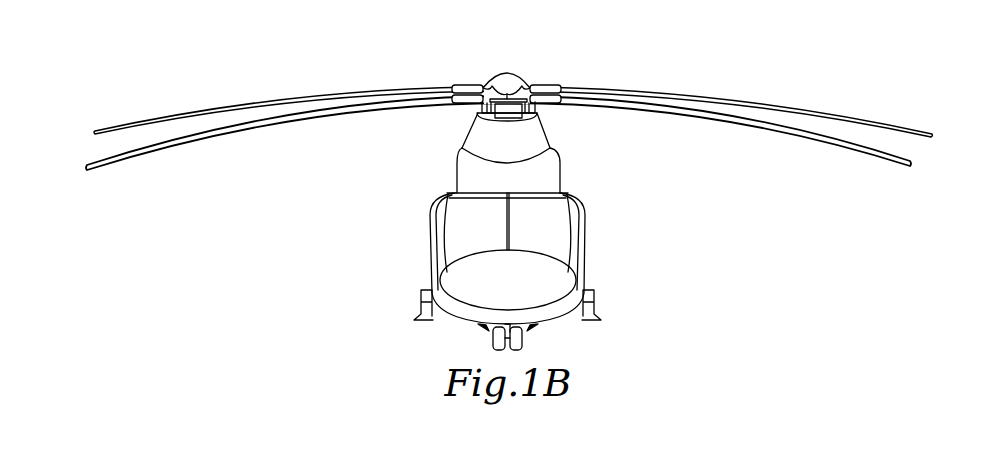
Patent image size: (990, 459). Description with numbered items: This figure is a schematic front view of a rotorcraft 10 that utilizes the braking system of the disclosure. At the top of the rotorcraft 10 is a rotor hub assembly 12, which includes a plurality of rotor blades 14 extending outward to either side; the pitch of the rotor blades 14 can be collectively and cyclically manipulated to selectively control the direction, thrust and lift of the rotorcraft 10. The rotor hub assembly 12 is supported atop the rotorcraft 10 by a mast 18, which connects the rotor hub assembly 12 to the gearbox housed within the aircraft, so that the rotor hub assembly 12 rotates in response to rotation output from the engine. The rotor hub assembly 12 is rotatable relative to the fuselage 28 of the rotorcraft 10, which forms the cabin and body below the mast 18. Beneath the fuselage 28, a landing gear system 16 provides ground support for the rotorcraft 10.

The rotorcraft 10 is at (609, 217).
The rotor hub assembly 12 is at (500, 72).
The rotor blades 14 is at (233, 106).
The landing gear system 16 is at (491, 340).
The mast 18 is at (483, 112).
The fuselage 28 is at (555, 312).